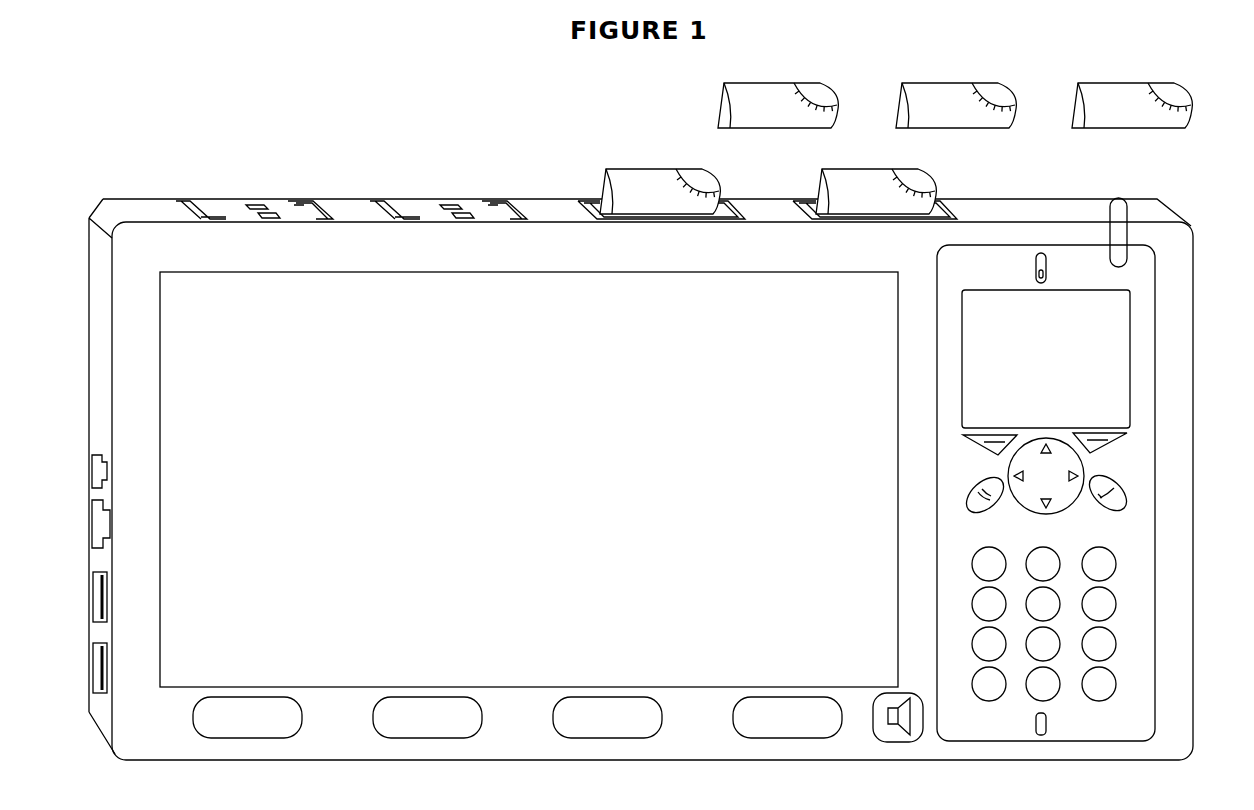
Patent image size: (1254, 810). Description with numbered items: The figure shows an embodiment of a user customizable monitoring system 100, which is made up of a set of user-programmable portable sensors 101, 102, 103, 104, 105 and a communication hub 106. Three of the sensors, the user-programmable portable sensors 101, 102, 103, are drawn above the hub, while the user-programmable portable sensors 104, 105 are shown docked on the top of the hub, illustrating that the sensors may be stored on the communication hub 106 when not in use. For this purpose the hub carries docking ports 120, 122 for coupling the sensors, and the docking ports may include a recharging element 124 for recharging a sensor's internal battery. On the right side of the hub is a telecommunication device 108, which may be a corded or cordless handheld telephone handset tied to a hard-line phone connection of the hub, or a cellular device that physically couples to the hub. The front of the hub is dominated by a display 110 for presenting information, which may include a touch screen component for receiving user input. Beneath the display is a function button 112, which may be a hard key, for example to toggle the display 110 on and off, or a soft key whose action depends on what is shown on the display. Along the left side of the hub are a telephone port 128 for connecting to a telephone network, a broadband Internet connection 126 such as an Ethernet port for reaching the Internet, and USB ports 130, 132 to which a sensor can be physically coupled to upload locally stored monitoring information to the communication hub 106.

The user customizable monitoring system 100 is at (142, 34).
The user-programmable portable sensor 101 is at (773, 84).
The user-programmable portable sensor 102 is at (943, 84).
The user-programmable portable sensor 103 is at (1133, 84).
The user-programmable portable sensor 104 is at (654, 169).
The user-programmable portable sensor 105 is at (814, 191).
The communication hub 106 is at (112, 200).
The telecommunication device 108 is at (1155, 373).
The display 110 is at (543, 488).
The function button 112 is at (283, 738).
The docking port 120 is at (206, 201).
The docking port 122 is at (398, 201).
The recharging element 124 is at (256, 205).
The broadband Internet connection 126 is at (92, 525).
The telephone port 128 is at (92, 472).
The USB port 130 is at (93, 601).
The USB port 132 is at (93, 667).